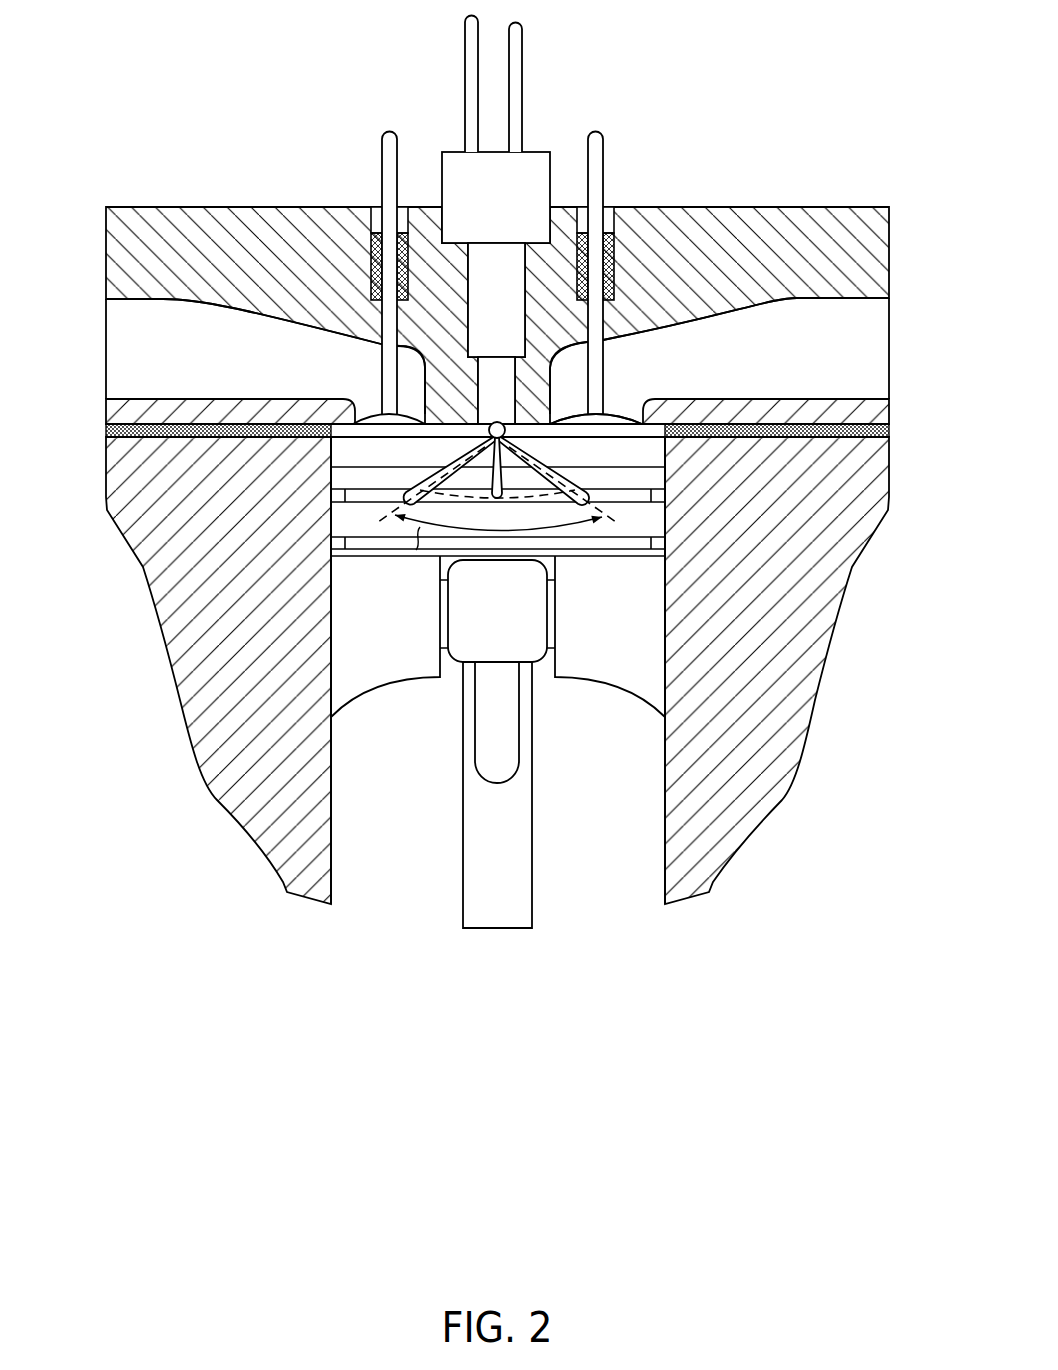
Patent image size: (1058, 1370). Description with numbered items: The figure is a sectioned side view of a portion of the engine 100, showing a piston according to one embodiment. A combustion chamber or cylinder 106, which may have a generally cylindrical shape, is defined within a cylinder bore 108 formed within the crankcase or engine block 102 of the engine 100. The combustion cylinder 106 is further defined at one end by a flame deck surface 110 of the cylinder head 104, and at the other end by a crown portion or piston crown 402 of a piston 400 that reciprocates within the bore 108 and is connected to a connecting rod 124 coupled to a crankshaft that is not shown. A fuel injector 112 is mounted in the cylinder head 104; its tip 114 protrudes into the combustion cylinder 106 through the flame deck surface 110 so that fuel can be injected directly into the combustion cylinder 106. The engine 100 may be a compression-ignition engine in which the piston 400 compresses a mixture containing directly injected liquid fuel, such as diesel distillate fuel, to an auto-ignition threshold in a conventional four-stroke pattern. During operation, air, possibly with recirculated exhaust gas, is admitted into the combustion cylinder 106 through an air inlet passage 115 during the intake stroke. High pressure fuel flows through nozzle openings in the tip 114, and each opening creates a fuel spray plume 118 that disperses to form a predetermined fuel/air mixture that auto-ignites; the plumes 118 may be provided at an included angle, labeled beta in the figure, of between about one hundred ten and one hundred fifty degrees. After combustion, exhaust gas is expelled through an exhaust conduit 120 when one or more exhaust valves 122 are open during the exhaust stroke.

The engine 100 is at (913, 189).
The engine block 102 is at (823, 648).
The cylinder head 104 is at (880, 250).
The combustion cylinder 106 is at (331, 447).
The cylinder bore 108 is at (665, 855).
The flame deck surface 110 is at (653, 434).
The fuel injector 112 is at (541, 150).
The tip 114 is at (380, 413).
The air inlet passage 115 is at (122, 380).
The fuel spray plume 118 is at (577, 478).
The exhaust conduit 120 is at (880, 343).
The exhaust valve 122 is at (600, 420).
The connecting rod 124 is at (532, 806).
The piston 400 is at (394, 670).
The piston crown 402 is at (332, 468).